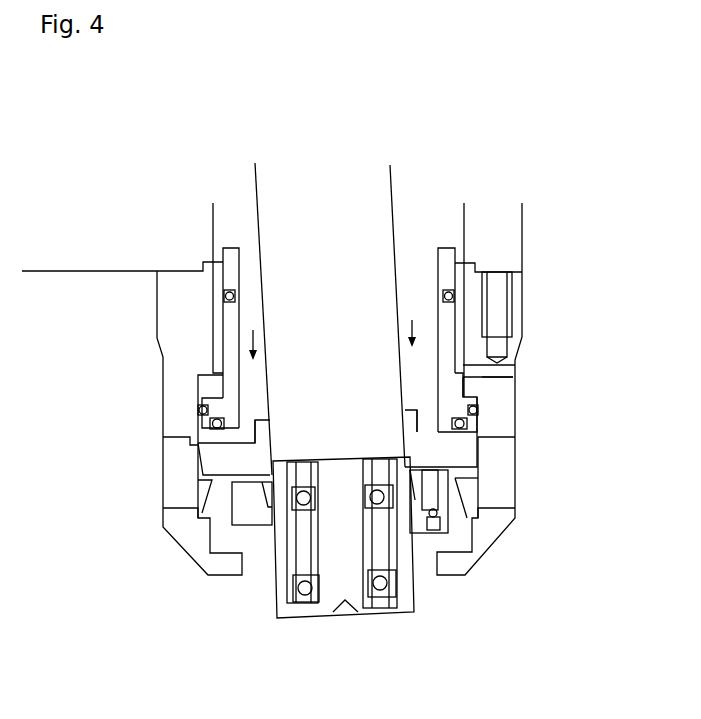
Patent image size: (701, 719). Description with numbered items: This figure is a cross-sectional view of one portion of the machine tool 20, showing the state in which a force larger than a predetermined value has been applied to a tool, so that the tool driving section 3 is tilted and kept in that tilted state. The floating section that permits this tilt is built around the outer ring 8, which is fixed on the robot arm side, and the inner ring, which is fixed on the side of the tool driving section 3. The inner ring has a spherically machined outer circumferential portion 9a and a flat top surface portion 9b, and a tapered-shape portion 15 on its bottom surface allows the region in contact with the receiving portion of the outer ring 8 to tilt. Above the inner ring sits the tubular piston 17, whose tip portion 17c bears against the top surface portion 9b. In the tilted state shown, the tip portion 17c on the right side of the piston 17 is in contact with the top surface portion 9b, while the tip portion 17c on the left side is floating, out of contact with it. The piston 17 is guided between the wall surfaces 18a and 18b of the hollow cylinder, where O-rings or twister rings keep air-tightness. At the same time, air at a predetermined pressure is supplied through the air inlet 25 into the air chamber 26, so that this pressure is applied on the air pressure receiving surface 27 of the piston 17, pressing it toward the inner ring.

The machine tool 20 is at (344, 76).
The tool driving section 3 is at (357, 186).
The outer ring 8 is at (168, 458).
The outer circumferential portion 9a is at (199, 462).
The top surface portion 9b is at (215, 447).
The tapered-shape portion 15 is at (467, 470).
The piston 17 is at (230, 252).
The tip portion 17c is at (223, 407).
The wall surface 18a is at (223, 320).
The wall surface 18b is at (200, 410).
The air inlet 25 is at (505, 377).
The air chamber 26 is at (477, 391).
The air pressure receiving surface 27 is at (467, 397).